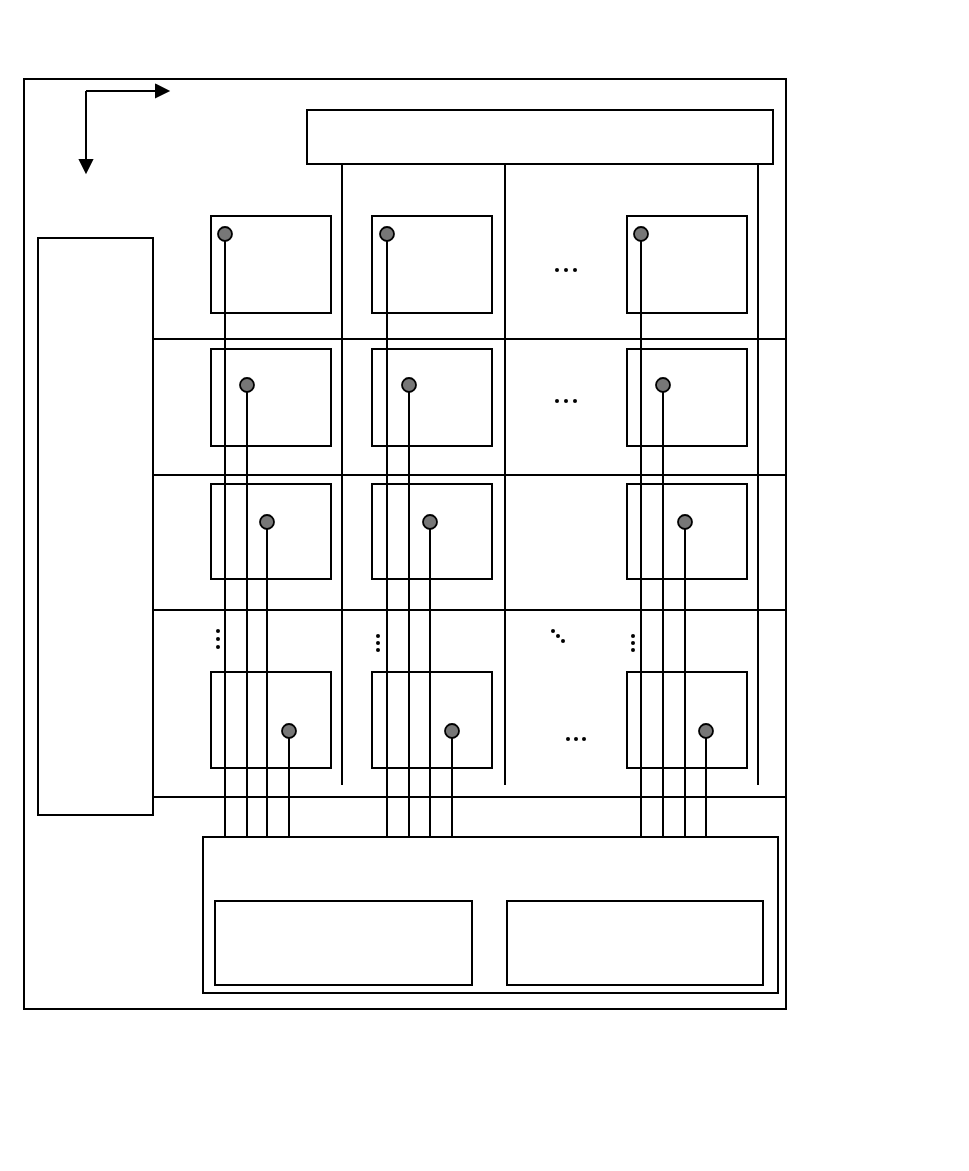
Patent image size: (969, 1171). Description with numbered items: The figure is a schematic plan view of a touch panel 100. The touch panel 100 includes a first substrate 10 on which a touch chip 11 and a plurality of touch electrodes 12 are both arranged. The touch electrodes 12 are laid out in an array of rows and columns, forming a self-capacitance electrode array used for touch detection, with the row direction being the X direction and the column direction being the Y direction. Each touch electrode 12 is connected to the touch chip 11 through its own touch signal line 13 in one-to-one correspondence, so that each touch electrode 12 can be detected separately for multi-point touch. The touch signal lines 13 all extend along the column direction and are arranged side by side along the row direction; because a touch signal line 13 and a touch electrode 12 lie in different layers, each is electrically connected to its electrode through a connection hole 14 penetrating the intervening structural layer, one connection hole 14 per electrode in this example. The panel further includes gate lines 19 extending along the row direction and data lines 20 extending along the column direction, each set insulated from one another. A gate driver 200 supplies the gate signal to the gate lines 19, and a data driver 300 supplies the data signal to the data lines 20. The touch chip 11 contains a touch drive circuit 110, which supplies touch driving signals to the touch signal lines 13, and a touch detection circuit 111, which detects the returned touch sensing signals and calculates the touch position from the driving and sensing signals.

The touch panel 100 is at (115, 58).
The first substrate 10 is at (291, 87).
The touch electrode 12 is at (721, 264).
The connection hole 14 is at (672, 387).
The gate line 19 is at (768, 477).
The touch signal line 13 is at (686, 653).
The data line 20 is at (760, 695).
The data driver 300 is at (540, 137).
The gate driver 200 is at (95, 526).
The touch chip 11 is at (490, 915).
The touch drive circuit 110 is at (343, 943).
The touch detection circuit 111 is at (635, 943).